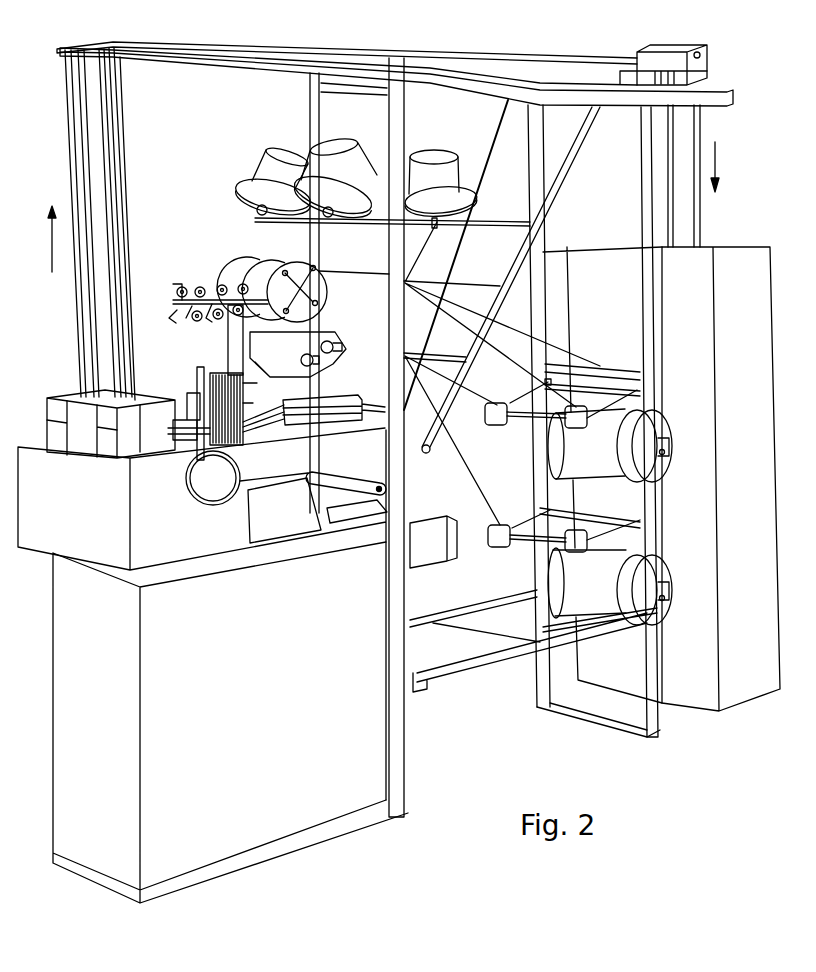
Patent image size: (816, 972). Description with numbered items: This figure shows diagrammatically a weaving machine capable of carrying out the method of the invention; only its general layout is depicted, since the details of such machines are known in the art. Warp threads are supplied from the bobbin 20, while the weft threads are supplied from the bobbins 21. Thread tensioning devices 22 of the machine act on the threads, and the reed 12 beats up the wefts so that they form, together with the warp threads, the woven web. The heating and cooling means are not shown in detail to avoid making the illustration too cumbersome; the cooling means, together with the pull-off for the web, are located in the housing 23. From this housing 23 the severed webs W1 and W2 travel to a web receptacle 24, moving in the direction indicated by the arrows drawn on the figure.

The severed web W1 is at (103, 121).
The severed web W2 is at (116, 160).
The reed 12 is at (192, 417).
The bobbin 20 is at (610, 573).
The bobbins 21 is at (277, 165).
The thread tensioning devices 22 is at (177, 290).
The housing 23 is at (80, 415).
The web receptacle 24 is at (745, 306).